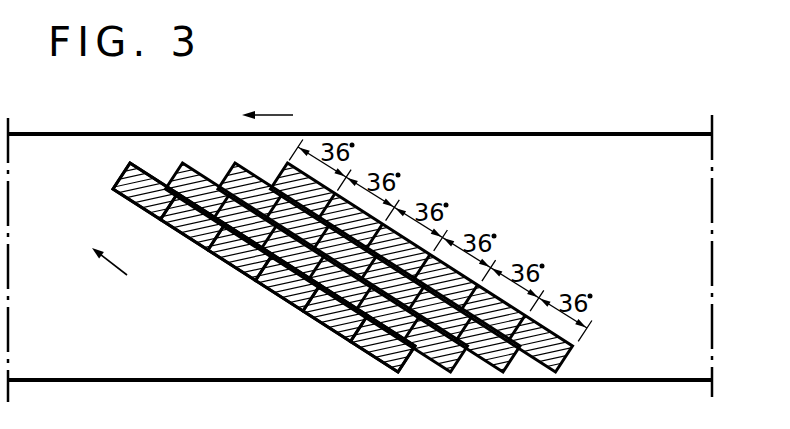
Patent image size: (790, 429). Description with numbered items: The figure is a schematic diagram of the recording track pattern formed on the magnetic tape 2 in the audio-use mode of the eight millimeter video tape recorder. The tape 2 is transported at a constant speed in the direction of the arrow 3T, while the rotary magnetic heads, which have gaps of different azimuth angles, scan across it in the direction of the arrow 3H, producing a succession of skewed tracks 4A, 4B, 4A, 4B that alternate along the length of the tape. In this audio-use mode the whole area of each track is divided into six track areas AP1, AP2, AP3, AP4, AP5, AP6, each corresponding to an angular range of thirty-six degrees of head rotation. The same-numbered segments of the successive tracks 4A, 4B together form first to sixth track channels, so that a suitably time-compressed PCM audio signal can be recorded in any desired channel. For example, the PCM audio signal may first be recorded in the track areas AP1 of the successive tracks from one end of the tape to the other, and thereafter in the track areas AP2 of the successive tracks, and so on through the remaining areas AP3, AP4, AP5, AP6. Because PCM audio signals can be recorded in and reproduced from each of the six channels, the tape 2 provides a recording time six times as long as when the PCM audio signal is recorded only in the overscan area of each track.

The magnetic tape 2 is at (661, 371).
The skewed track 4A is at (406, 364).
The skewed track 4B is at (457, 364).
The track area AP1 is at (398, 372).
The track area AP2 is at (350, 342).
The track area AP3 is at (303, 311).
The track area AP4 is at (256, 280).
The track area AP5 is at (208, 250).
The track area AP6 is at (160, 220).
The arrow indicating tape transport direction 3T is at (275, 115).
The arrow indicating head rotation direction 3H is at (112, 267).